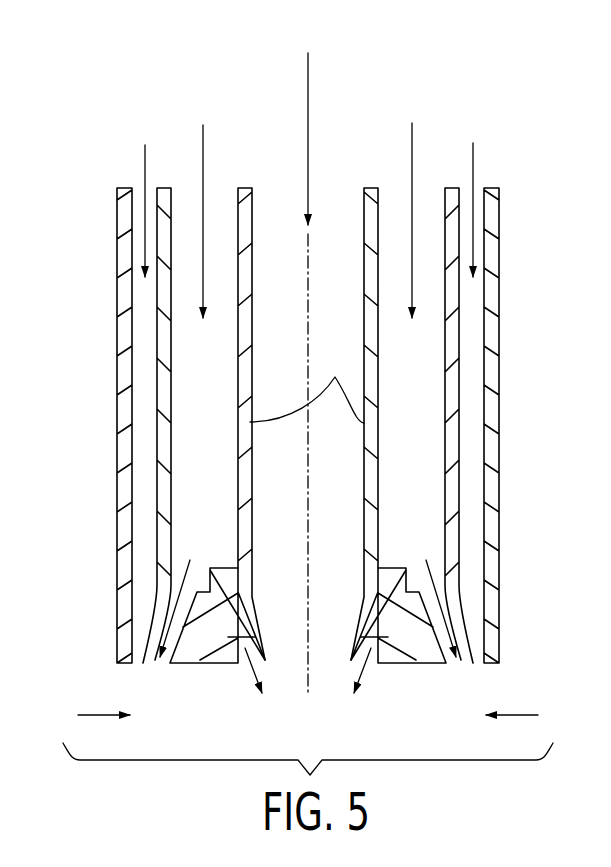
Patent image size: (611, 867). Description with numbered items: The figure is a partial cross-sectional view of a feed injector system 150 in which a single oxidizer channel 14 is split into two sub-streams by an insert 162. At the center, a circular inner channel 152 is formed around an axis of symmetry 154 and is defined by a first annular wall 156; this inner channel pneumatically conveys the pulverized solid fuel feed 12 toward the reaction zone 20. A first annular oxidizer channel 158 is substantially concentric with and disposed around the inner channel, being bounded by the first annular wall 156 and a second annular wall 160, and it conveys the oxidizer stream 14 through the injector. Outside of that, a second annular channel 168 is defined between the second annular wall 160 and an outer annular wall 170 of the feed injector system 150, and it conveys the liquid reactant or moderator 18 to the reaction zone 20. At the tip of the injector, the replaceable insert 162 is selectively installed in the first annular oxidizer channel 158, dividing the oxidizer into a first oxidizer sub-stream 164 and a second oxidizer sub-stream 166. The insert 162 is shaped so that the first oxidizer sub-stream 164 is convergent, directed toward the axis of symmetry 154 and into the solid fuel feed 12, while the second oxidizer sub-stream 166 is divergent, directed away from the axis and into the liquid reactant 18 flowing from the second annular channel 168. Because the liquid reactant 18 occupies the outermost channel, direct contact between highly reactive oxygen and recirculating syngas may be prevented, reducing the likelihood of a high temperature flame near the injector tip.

The pulverized solid fuel feed 12 is at (310, 78).
The oxidizer channel 14 is at (203, 125).
The liquid reactant or moderator 18 is at (145, 150).
The reaction zone 20 is at (98, 712).
The feed injector system 150 is at (138, 56).
The circular inner channel 152 is at (340, 200).
The axis of symmetry 154 is at (310, 687).
The first annular wall 156 is at (307, 384).
The first annular oxidizer channel 158 is at (185, 200).
The second annular wall 160 is at (172, 435).
The insert 162 is at (180, 665).
The first oxidizer sub-stream 164 is at (247, 664).
The second oxidizer sub-stream 166 is at (178, 597).
The second annular channel 168 is at (137, 192).
The outer annular wall 170 is at (118, 415).